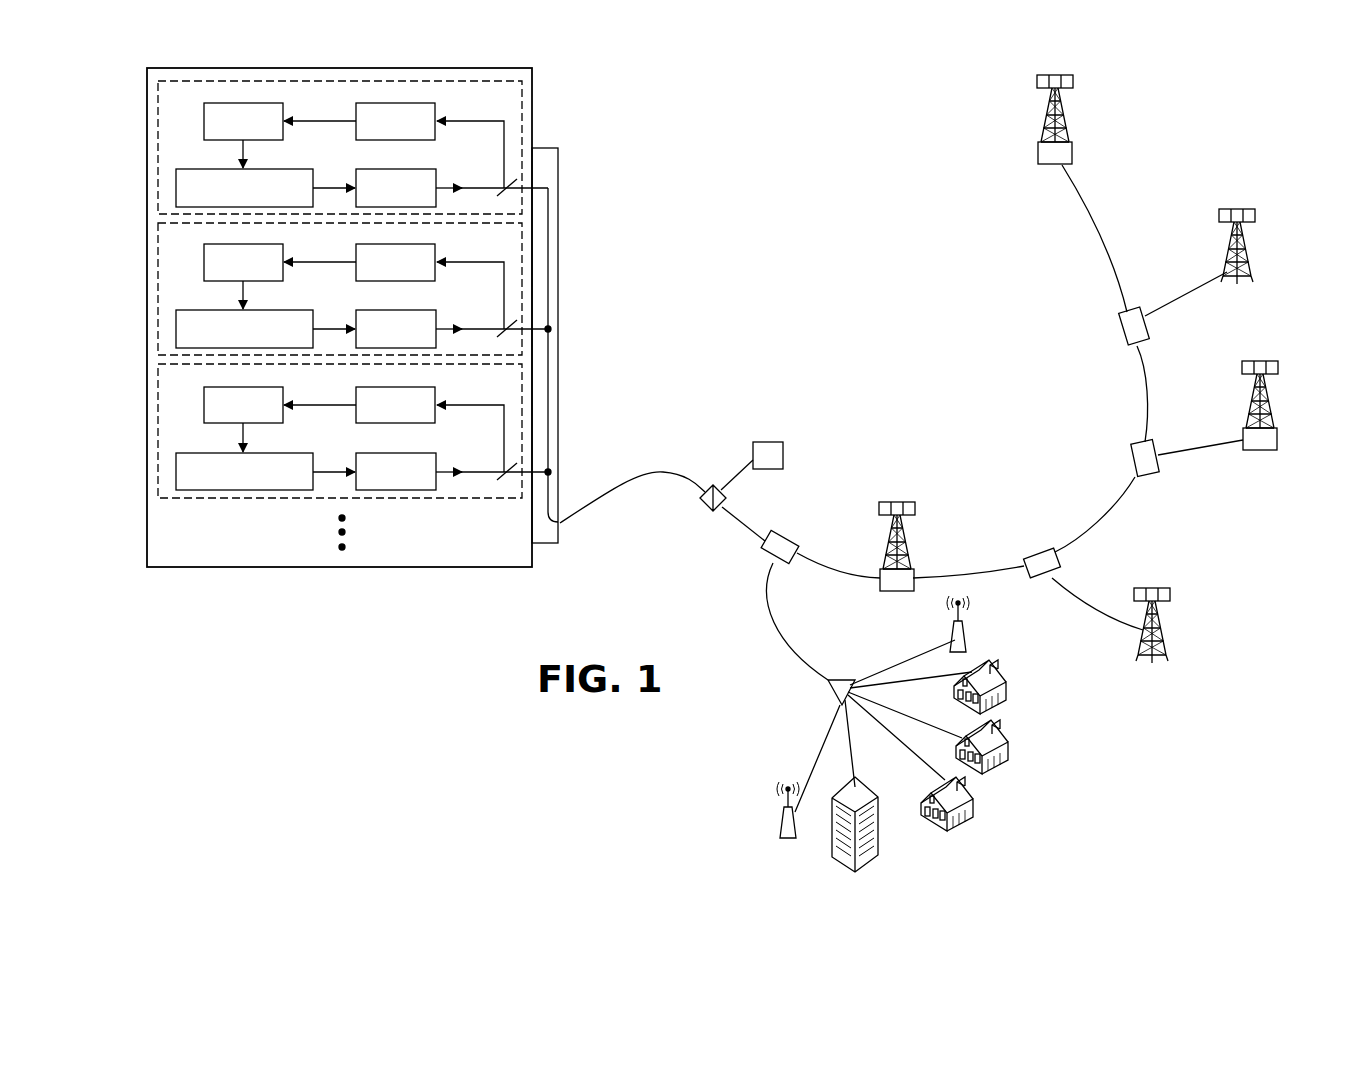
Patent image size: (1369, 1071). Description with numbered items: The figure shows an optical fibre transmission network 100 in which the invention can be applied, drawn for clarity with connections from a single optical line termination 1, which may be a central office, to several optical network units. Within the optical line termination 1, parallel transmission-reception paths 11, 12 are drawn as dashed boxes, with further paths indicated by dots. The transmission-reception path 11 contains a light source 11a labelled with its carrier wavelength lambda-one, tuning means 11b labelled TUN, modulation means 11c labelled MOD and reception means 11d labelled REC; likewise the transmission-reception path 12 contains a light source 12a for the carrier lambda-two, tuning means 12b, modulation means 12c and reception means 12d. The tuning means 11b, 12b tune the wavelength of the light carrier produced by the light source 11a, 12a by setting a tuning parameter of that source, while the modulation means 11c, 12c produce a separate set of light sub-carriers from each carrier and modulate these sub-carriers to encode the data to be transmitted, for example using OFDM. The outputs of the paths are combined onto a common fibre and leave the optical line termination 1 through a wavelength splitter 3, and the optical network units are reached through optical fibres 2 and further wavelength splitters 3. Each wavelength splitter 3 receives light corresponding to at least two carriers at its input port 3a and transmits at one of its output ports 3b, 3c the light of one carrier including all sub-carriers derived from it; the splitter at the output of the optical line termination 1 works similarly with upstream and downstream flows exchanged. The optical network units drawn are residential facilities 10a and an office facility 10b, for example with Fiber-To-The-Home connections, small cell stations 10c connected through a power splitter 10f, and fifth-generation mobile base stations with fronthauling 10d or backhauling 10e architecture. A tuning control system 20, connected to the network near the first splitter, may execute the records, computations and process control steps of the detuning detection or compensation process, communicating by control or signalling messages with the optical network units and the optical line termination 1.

The optical fibre transmission network 100 is at (903, 140).
The optical line termination 1 is at (187, 568).
The transmission-reception path 11 is at (191, 110).
The light source 11a is at (280, 169).
The tuning means 11b is at (283, 110).
The modulation means 11c is at (436, 180).
The reception means 11d is at (435, 110).
The transmission-reception path 12 is at (191, 251).
The light source 12a is at (280, 310).
The tuning means 12b is at (283, 251).
The modulation means 12c is at (436, 321).
The reception means 12d is at (435, 251).
The optical fibres 2 is at (677, 470).
The wavelength splitter 3 is at (909, 399).
The input port 3a is at (558, 522).
The output port 3b is at (548, 190).
The output port 3c is at (548, 329).
The tuning control system 20 is at (783, 442).
The residential facility 10a is at (1003, 692).
The office facility 10b is at (832, 848).
The small cell station 10c is at (968, 636).
The 5G mobile base station with fronthauling 10d is at (1065, 125).
The 5G mobile base station with backhauling 10e is at (1245, 255).
The power splitter 10f is at (830, 692).